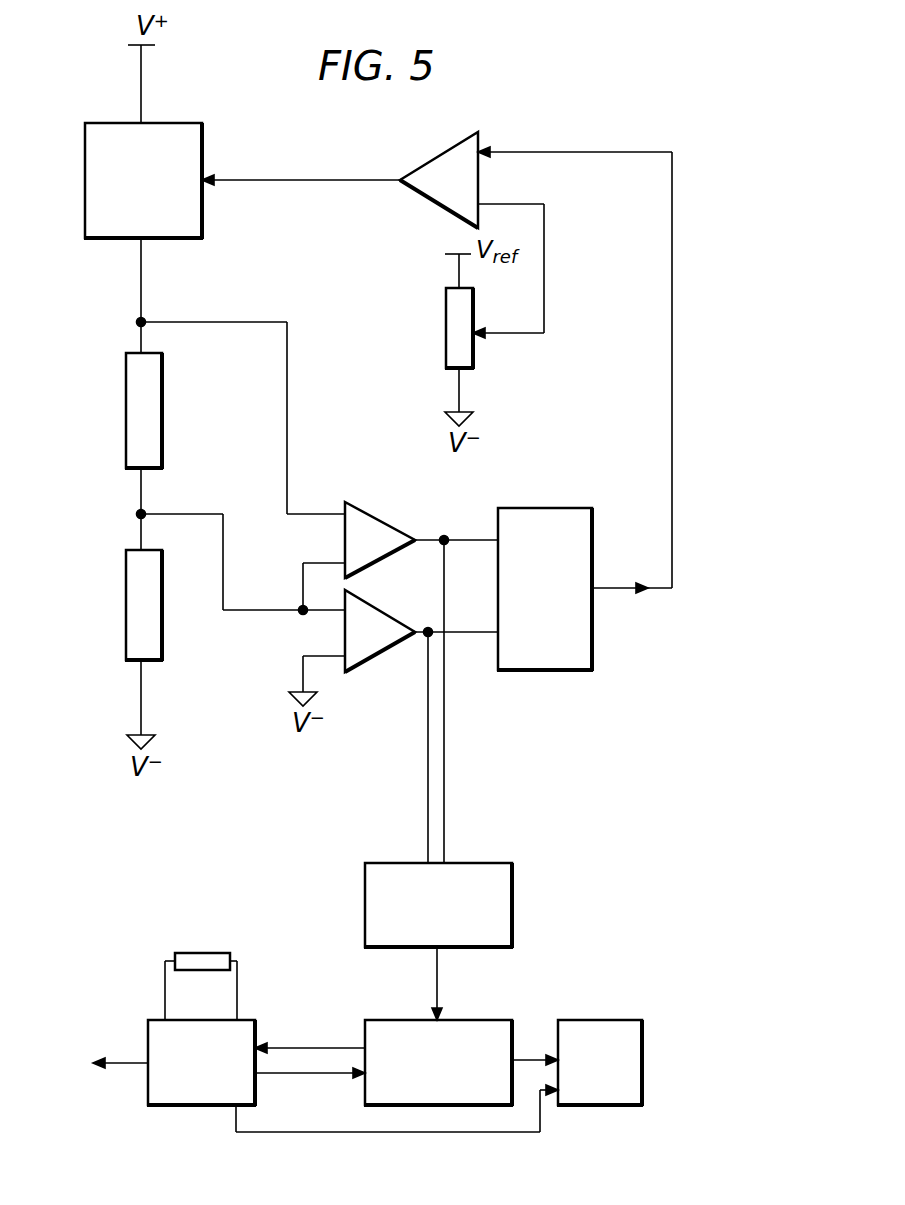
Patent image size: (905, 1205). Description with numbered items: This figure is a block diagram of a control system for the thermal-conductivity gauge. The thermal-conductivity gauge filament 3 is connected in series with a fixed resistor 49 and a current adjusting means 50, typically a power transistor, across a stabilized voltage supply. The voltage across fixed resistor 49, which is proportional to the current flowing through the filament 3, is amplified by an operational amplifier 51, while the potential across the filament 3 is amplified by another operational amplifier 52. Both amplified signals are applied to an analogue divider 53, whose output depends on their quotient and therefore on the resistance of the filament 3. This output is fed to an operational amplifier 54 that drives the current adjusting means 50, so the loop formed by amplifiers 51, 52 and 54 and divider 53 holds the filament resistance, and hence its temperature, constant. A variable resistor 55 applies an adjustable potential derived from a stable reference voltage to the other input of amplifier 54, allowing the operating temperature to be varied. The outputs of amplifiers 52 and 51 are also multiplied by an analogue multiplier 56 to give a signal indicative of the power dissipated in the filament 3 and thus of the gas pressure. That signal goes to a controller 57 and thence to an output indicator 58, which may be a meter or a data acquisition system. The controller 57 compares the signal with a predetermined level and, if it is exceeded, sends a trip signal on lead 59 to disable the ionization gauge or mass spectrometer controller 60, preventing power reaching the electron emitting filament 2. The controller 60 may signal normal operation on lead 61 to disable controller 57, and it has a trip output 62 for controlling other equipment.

The electron emitting filament 2 is at (198, 953).
The thermal-conductivity gauge filament 3 is at (133, 392).
The fixed resistor 49 is at (128, 590).
The current adjusting means 50 is at (164, 198).
The operational amplifier 51 is at (384, 646).
The operational amplifier 52 is at (384, 554).
The analogue divider 53 is at (567, 602).
The operational amplifier 54 is at (466, 188).
The variable resistor 55 is at (446, 300).
The analogue multiplier 56 is at (460, 920).
The controller 57 is at (458, 1078).
The output indicator 58 is at (620, 1078).
The lead 59 is at (283, 1046).
The ionization gauge or mass spectrometer controller 60 is at (222, 1078).
The lead 61 is at (318, 1072).
The trip output 62 is at (86, 1078).